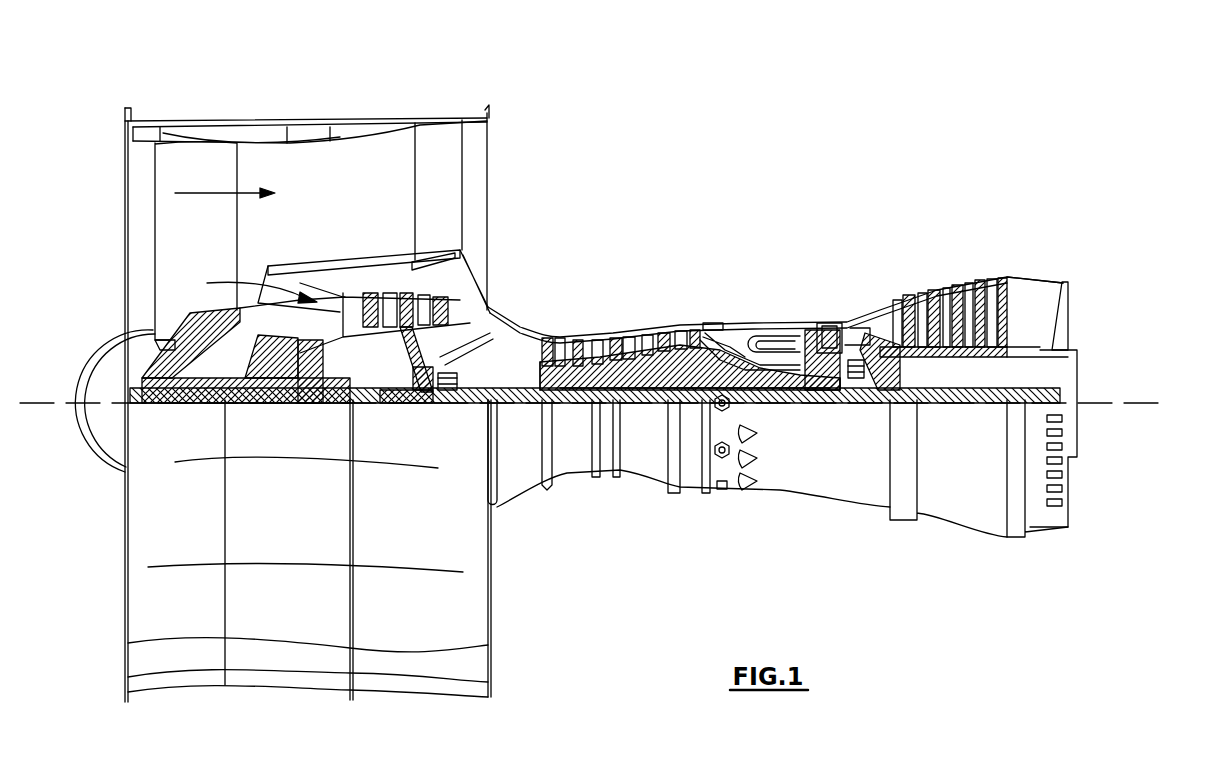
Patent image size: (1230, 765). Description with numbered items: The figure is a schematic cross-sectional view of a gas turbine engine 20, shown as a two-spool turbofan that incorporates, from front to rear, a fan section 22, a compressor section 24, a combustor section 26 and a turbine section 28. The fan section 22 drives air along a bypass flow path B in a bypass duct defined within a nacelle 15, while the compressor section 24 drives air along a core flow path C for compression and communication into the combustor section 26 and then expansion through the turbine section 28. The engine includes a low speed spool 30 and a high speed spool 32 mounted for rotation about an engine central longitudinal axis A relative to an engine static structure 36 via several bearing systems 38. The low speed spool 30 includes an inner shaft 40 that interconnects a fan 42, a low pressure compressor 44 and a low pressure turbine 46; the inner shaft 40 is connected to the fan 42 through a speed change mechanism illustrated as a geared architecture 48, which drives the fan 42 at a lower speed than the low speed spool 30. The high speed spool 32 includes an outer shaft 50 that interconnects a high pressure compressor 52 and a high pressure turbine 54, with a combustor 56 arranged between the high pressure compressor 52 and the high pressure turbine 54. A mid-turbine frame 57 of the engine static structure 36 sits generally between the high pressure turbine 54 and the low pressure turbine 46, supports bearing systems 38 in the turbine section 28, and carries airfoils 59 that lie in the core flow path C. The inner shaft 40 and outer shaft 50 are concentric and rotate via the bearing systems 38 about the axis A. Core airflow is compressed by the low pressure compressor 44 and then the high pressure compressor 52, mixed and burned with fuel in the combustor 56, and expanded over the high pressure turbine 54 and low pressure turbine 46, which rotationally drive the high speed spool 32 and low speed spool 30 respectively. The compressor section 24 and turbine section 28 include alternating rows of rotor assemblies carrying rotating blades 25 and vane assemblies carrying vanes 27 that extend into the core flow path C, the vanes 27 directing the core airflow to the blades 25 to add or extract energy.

The nacelle 15 is at (306, 120).
The gas turbine engine 20 is at (770, 172).
The fan section 22 is at (238, 112).
The compressor section 24 is at (538, 307).
The rotating blades 25 is at (370, 297).
The combustor section 26 is at (760, 304).
The vanes 27 is at (389, 303).
The turbine section 28 is at (908, 262).
The low speed spool 30 is at (645, 405).
The high speed spool 32 is at (688, 367).
The engine static structure 36 is at (687, 492).
The bearing systems 38 is at (452, 382).
The inner shaft 40 is at (508, 410).
The fan 42 is at (181, 247).
The low pressure compressor 44 is at (410, 310).
The low pressure turbine 46 is at (947, 293).
The geared architecture 48 is at (315, 380).
The outer shaft 50 is at (767, 398).
The high pressure compressor 52 is at (620, 373).
The high pressure turbine 54 is at (828, 320).
The combustor 56 is at (758, 349).
The mid-turbine frame 57 is at (870, 307).
The airfoils 59 is at (867, 337).
The engine central longitudinal axis A is at (1158, 403).
The bypass flow path B is at (214, 193).
The core flow path C is at (252, 287).